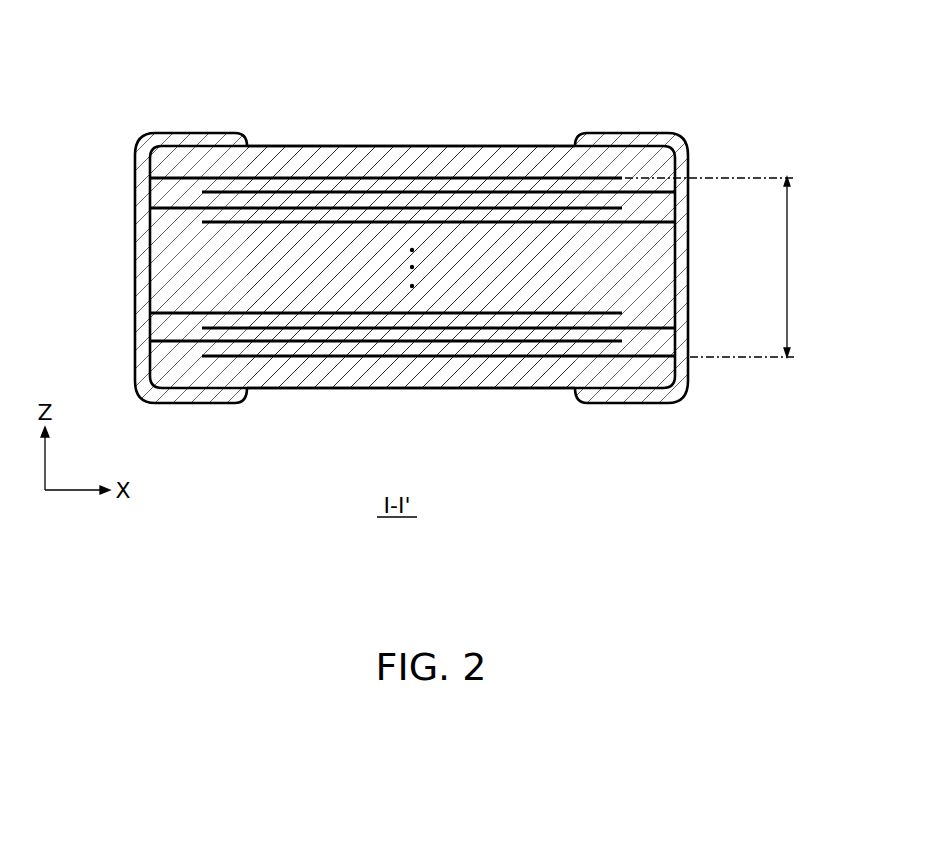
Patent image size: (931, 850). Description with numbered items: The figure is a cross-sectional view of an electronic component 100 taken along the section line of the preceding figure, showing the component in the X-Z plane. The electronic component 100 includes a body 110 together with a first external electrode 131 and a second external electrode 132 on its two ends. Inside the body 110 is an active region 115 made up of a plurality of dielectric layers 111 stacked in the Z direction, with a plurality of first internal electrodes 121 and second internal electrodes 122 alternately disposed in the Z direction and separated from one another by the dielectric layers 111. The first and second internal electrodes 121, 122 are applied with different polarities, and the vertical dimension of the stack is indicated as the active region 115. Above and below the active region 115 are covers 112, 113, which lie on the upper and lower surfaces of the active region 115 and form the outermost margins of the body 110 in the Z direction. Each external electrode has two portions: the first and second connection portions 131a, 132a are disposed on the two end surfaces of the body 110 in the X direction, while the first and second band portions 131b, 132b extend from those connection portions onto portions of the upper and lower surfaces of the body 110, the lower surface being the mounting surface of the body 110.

The electronic component 100 is at (398, 35).
The body 110 is at (363, 146).
The dielectric layer 111 is at (650, 207).
The cover 112 is at (476, 160).
The cover 113 is at (476, 376).
The active region 115 is at (729, 267).
The first internal electrode 121 is at (178, 210).
The second internal electrode 122 is at (650, 225).
The first external electrode 131 is at (237, 63).
The first connection portion 131a is at (134, 171).
The first band portion 131b is at (210, 133).
The second external electrode 132 is at (733, 63).
The second connection portion 132a is at (688, 170).
The second band portion 132b is at (615, 133).